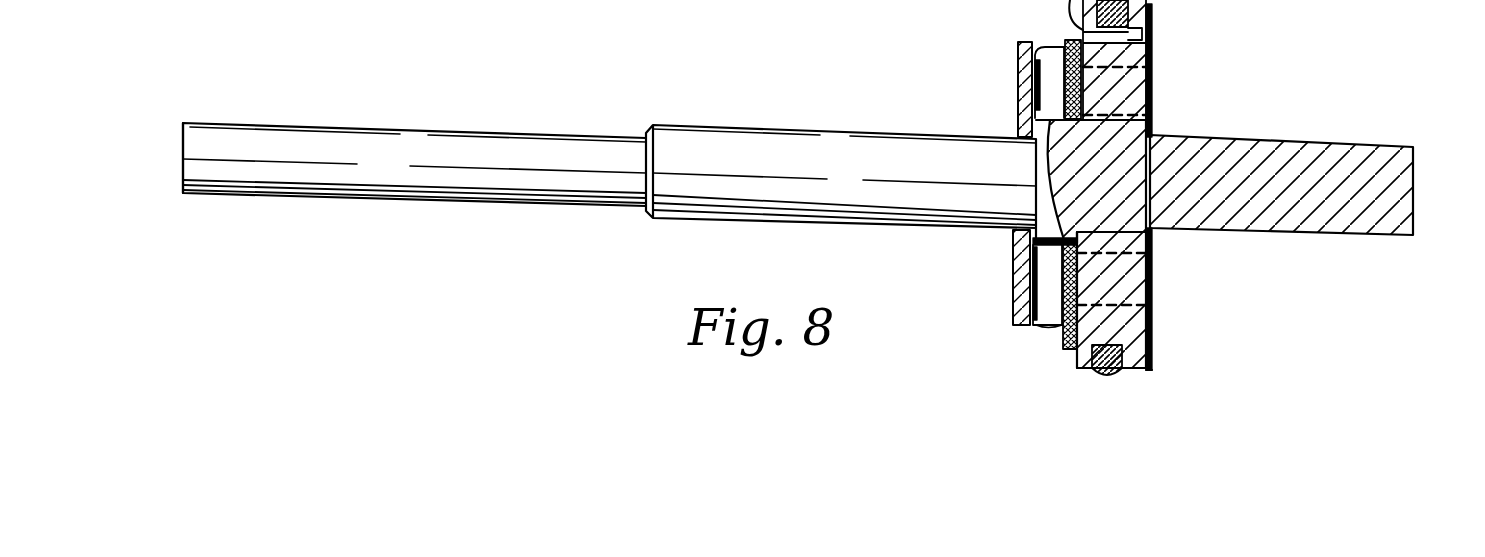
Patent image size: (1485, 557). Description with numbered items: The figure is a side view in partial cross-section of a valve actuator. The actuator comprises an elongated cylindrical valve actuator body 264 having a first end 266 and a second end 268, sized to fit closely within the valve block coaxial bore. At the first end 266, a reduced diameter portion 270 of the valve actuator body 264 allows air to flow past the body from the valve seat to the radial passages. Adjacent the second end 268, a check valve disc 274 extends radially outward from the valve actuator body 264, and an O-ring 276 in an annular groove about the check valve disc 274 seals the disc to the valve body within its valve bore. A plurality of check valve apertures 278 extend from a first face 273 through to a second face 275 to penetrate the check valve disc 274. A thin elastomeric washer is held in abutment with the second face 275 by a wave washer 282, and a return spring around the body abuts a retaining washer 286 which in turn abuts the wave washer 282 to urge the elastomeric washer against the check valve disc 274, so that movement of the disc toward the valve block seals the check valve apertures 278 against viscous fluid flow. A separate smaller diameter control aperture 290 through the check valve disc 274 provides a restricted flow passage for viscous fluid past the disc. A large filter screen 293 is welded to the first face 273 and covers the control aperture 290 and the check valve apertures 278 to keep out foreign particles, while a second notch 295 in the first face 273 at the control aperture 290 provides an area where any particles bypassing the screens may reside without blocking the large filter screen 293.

The valve actuator body 264 is at (918, 195).
The first end 266 is at (183, 152).
The second end 268 is at (1413, 172).
The reduced diameter portion 270 is at (568, 183).
The first face 273 is at (1148, 364).
The check valve disc 274 is at (1176, 357).
The second face 275 is at (1075, 360).
The O-ring 276 is at (1105, 374).
The check valve apertures 278 is at (1155, 92).
The wave washer 282 is at (1050, 52).
The retaining washer 286 is at (1018, 67).
The control aperture 290 is at (1160, 22).
The large filter screen 293 is at (1152, 285).
The second notch 295 is at (1152, 40).